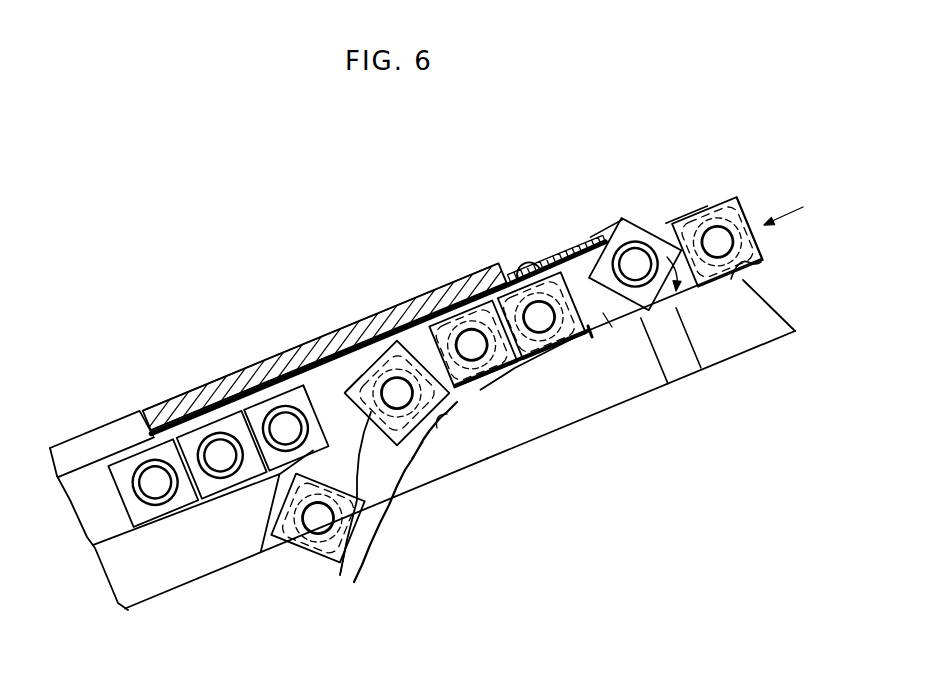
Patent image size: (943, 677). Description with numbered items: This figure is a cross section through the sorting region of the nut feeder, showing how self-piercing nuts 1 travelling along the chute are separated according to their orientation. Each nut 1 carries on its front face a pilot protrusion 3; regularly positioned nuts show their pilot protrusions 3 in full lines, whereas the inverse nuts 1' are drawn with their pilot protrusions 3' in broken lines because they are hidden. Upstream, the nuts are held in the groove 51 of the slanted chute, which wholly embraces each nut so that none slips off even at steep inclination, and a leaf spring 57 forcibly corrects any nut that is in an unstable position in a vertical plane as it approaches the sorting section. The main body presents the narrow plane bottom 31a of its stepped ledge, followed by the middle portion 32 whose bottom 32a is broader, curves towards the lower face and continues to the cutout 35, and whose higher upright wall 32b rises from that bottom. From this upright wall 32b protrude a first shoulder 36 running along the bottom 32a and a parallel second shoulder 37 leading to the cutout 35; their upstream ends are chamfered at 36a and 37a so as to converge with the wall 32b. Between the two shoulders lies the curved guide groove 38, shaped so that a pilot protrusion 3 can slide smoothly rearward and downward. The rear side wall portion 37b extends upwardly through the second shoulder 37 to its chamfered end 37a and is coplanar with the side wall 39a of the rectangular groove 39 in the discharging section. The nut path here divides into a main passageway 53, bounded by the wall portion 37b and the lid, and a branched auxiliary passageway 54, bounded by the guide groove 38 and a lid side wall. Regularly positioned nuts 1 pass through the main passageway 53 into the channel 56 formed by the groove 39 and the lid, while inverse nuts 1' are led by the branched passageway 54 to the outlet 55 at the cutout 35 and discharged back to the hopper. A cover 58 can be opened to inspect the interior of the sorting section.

The self-piercing nut 1 is at (396, 363).
The inverse nut 1' is at (514, 386).
The pilot protrusion 3 is at (400, 355).
The insert in transferred position 3' is at (514, 386).
The narrow plane bottom 31a is at (748, 268).
The middle portion 32 is at (557, 407).
The bottom of the middle portion 32a is at (438, 440).
The upright wall 32b is at (668, 385).
The cutout 35 is at (383, 510).
The outlet 55 is at (343, 557).
The first shoulder 36 is at (500, 402).
The chamfered end of first shoulder 36a is at (593, 303).
The second shoulder 37 is at (409, 328).
The chamfered end of second shoulder 37a is at (557, 256).
The rear side wall portion 37b is at (381, 368).
The curved guide groove 38 is at (340, 388).
The groove 39 is at (137, 540).
The side wall of groove 39a is at (98, 512).
The groove 51 is at (664, 224).
The main passageway 53 is at (305, 388).
The branched auxiliary passageway 54 is at (370, 450).
The channel 56 is at (88, 478).
The leaf spring 57 is at (568, 240).
The cover 58 is at (468, 286).